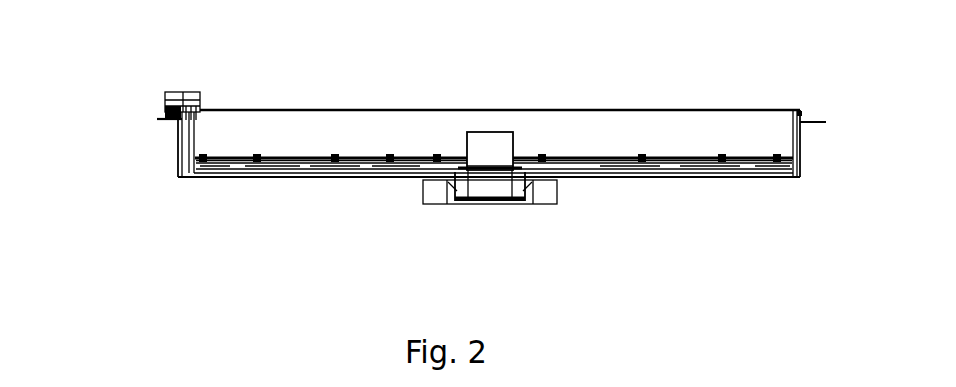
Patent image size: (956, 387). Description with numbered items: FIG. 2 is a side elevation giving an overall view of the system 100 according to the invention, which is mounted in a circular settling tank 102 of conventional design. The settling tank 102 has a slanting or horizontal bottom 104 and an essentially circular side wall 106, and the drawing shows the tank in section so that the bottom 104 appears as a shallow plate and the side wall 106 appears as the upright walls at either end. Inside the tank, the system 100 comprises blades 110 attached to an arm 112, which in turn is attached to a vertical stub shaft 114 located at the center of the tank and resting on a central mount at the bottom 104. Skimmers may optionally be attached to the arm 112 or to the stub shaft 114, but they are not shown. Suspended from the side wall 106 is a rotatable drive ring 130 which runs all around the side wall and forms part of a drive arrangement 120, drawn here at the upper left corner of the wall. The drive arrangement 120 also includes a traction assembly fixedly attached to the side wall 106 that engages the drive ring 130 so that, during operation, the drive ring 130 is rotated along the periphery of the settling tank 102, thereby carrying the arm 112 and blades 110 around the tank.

The system 100 is at (160, 225).
The circular settling tank 102 is at (446, 98).
The bottom 104 is at (598, 179).
The side wall 106 is at (178, 141).
The blades 110 is at (303, 179).
The arm 112 is at (392, 156).
The vertical stub shaft 114 is at (493, 131).
The drive arrangement 120 is at (182, 89).
The rotatable drive ring 130 is at (688, 161).